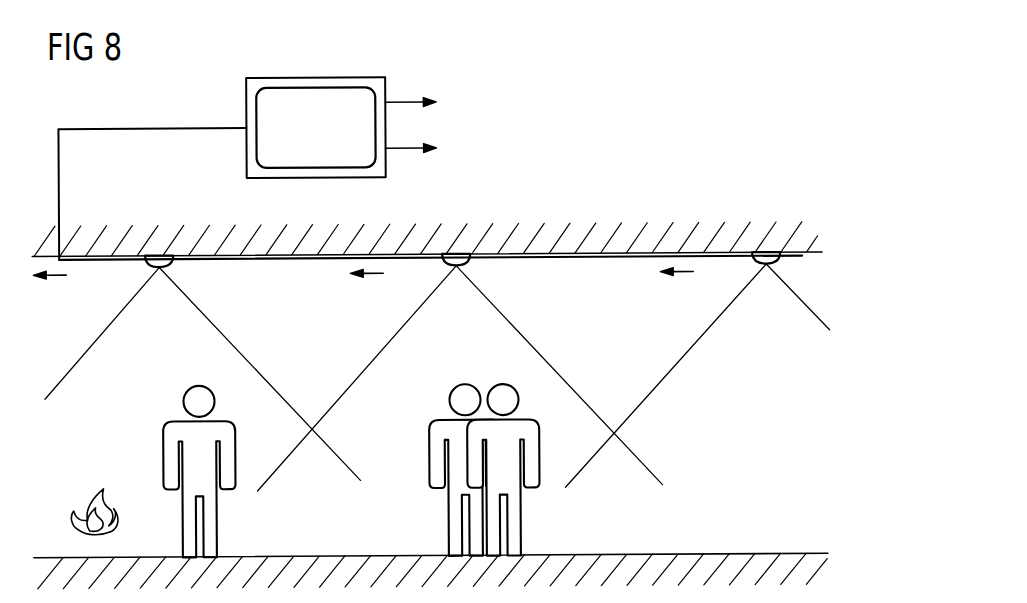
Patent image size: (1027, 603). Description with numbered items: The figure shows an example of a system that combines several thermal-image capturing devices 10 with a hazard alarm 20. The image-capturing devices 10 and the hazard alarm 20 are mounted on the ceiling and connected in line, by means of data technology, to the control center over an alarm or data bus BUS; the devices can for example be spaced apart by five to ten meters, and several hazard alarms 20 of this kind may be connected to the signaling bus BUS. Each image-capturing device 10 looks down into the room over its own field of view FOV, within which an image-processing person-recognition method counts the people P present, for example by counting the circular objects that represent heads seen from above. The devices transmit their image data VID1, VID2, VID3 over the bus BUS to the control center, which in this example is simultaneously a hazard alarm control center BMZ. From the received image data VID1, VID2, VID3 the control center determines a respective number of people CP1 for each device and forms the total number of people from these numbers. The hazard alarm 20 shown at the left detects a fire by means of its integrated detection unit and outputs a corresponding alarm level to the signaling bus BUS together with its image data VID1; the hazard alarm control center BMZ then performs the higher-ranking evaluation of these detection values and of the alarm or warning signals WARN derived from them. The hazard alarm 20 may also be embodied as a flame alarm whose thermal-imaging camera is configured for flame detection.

The thermal-image capturing device 10 is at (468, 254).
The hazard alarm 20 is at (162, 254).
The hazard alarm control center BMZ is at (316, 127).
The signaling bus BUS is at (343, 256).
The field of view FOV is at (283, 362).
The people P is at (225, 430).
The image data VID1 is at (86, 277).
The image data VID2 is at (388, 273).
The image data VID3 is at (696, 271).
The number of people CP1 is at (514, 105).
The warning signal WARN is at (486, 149).